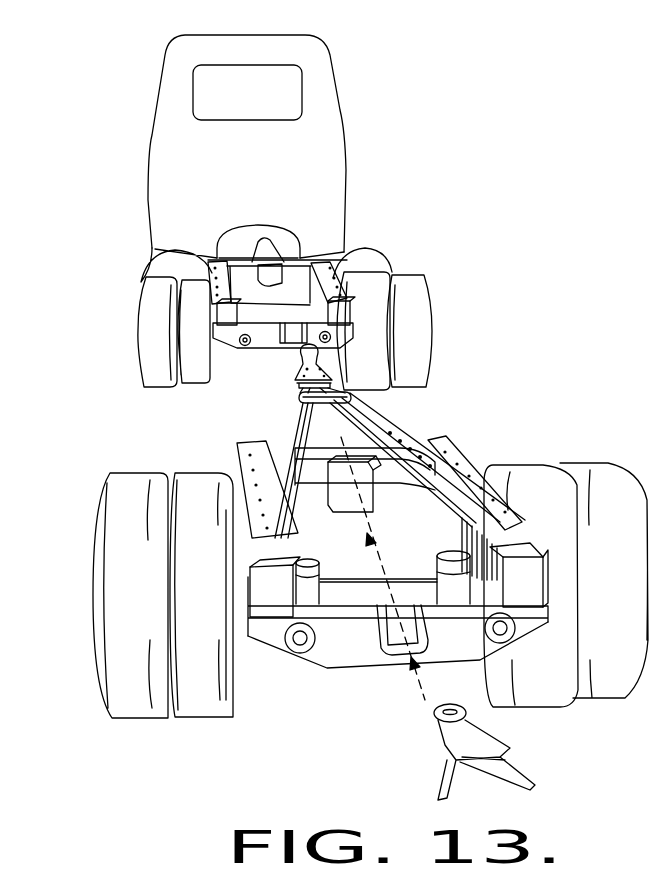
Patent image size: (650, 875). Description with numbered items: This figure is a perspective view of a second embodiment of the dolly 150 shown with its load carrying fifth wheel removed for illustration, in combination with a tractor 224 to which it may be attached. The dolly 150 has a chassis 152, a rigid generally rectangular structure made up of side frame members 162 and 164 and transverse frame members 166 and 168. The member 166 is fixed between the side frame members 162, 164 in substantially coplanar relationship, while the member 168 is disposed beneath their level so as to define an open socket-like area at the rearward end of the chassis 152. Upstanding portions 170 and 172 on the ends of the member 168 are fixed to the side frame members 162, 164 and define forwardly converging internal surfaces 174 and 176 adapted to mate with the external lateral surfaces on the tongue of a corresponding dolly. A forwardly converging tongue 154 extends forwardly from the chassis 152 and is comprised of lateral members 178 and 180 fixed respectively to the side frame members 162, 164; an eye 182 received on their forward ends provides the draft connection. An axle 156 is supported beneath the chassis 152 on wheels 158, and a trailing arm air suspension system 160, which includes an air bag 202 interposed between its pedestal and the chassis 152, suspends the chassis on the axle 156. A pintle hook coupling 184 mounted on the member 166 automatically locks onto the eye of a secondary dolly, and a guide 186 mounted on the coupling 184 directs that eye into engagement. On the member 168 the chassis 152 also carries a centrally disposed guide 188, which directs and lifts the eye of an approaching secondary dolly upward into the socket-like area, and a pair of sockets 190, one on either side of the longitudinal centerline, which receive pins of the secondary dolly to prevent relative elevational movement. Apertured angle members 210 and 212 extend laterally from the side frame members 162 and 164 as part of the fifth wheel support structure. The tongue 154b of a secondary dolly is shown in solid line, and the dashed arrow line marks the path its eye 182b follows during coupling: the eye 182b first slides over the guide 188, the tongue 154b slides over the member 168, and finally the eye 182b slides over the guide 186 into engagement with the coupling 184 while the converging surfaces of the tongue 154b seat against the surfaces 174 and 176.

The dolly 150 is at (95, 458).
The chassis 152 is at (226, 460).
The tongue 154 is at (290, 403).
The tongue of secondary dolly 154b is at (530, 778).
The axle 156 is at (243, 600).
The wheels 158 is at (182, 722).
The trailing arm air suspension system 160 is at (434, 566).
The side frame member 162 is at (295, 517).
The side frame member 164 is at (450, 498).
The transverse frame member 166 is at (292, 450).
The transverse frame member 168 is at (337, 666).
The upstanding portion 170 is at (250, 574).
The upstanding portion 172 is at (530, 548).
The internal surface 174 is at (262, 558).
The internal surface 176 is at (497, 545).
The lateral member 178 is at (293, 396).
The lateral member 180 is at (370, 404).
The eye 182 is at (297, 362).
The eye of secondary dolly tongue 182b is at (445, 723).
The pintle hook coupling 184 is at (385, 430).
The guide 186 is at (363, 493).
The guide 188 is at (393, 660).
The sockets 190 is at (300, 640).
The air bag 202 is at (303, 568).
The apertured angle member 210 is at (240, 446).
The apertured angle member 212 is at (460, 442).
The tractor 224 is at (348, 96).